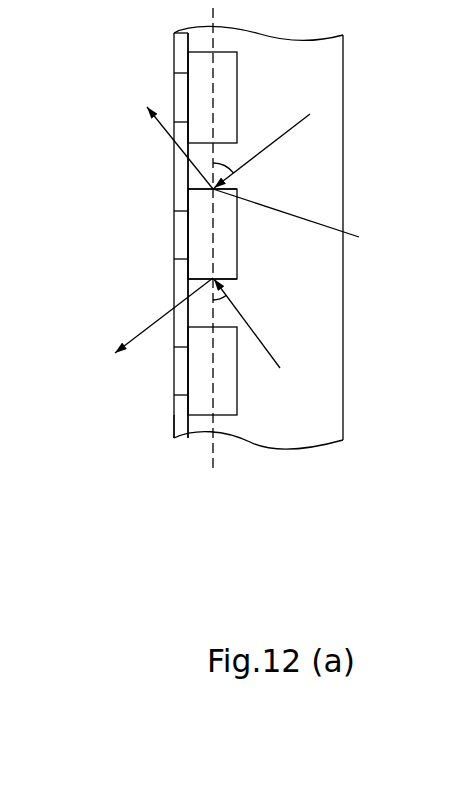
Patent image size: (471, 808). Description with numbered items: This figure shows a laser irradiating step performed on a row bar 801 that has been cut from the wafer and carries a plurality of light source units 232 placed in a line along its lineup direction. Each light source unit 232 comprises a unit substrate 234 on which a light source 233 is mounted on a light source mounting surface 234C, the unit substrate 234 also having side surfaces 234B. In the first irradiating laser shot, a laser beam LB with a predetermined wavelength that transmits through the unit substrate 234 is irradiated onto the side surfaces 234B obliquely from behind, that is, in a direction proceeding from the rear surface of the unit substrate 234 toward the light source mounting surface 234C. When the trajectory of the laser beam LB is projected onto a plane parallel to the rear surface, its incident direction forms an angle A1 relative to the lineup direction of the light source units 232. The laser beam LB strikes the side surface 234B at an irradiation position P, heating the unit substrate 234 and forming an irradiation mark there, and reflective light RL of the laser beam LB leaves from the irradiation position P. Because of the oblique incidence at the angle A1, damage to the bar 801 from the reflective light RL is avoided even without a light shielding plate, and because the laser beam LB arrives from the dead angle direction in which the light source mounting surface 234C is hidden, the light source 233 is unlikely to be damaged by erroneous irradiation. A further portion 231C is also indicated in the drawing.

The light source unit 232 is at (137, 225).
The light source 233 is at (180, 92).
The unit substrate 234 is at (196, 61).
The side surface 234B is at (212, 189).
The light source mounting surface 234C is at (188, 270).
The side wall 231C is at (175, 418).
The row bar 801 is at (277, 425).
The laser beam LB is at (277, 258).
The reflective light RL is at (146, 226).
The angle A1 is at (237, 237).
The irradiation position P is at (298, 222).